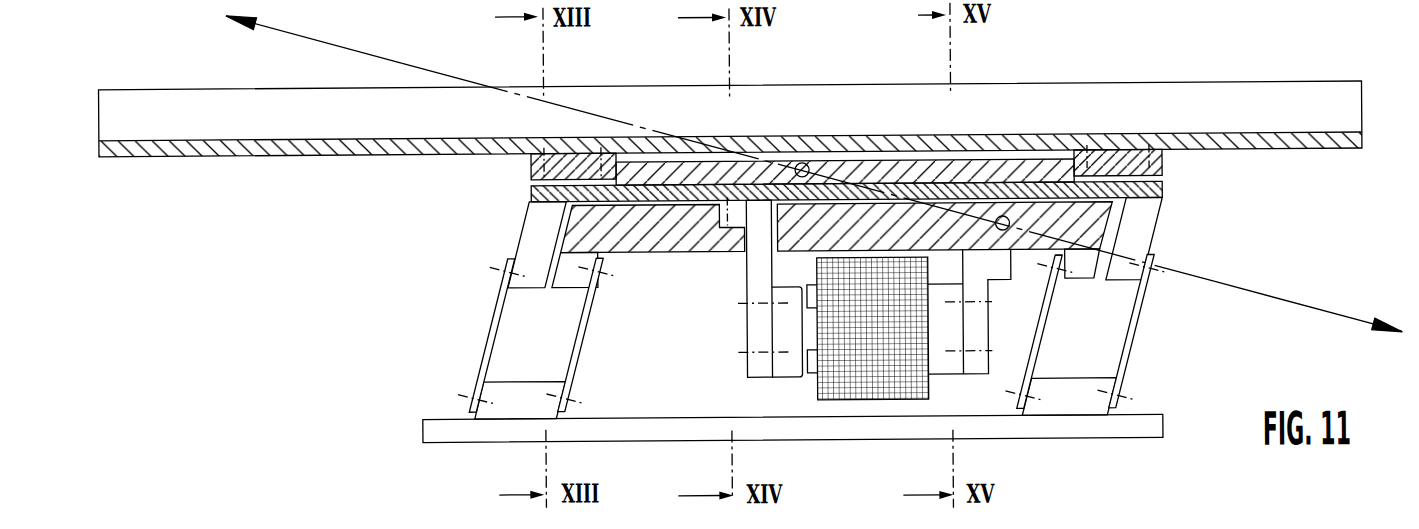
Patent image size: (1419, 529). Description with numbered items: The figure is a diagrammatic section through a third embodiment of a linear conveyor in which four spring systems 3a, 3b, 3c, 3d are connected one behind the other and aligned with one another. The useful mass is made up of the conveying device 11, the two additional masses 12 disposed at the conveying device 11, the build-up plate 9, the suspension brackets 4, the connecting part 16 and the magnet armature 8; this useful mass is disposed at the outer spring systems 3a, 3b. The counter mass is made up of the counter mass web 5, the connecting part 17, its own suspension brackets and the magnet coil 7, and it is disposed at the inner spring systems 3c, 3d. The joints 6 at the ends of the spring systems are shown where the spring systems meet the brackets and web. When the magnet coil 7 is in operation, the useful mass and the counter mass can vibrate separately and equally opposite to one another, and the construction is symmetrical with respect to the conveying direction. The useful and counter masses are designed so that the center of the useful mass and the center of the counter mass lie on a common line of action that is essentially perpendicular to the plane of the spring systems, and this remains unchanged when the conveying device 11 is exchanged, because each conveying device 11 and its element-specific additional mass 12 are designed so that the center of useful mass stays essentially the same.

The conveying device 11 is at (1240, 93).
The additional masses 12 is at (531, 168).
The build-up plate 9 is at (1166, 199).
The suspension brackets 4 is at (533, 218).
The counter mass web 5 is at (663, 240).
The pivot joint 6 is at (585, 276).
The connecting part 16 is at (748, 272).
The magnet armature 8 is at (775, 323).
The magnet coil 7 is at (880, 389).
The connecting part 17 is at (988, 320).
The spring system 3a is at (1132, 350).
The spring system 3b is at (488, 348).
The spring system 3c is at (587, 335).
The spring system 3d is at (1038, 362).